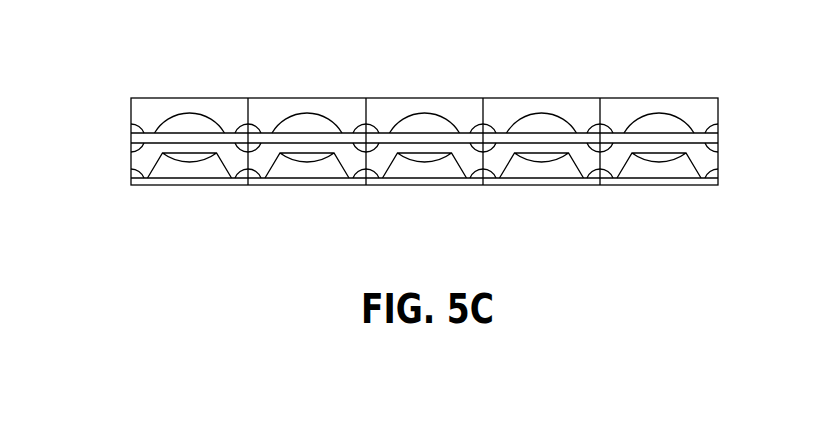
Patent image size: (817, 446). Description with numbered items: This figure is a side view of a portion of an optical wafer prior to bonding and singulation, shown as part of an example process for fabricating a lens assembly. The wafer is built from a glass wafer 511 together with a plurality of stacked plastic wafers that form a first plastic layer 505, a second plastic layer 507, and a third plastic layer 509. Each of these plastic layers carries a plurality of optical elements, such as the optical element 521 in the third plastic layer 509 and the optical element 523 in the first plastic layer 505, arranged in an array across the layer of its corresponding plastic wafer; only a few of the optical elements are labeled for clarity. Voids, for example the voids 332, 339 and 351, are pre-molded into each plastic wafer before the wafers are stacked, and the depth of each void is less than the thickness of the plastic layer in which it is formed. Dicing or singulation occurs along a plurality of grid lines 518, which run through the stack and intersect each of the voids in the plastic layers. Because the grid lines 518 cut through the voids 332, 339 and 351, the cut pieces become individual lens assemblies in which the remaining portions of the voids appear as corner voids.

The first plastic layer 505 is at (131, 163).
The second plastic layer 507 is at (131, 141).
The third plastic layer 509 is at (131, 106).
The glass wafer 511 is at (131, 186).
The void 332 is at (366, 131).
The optical element 521 is at (414, 114).
The grid lines 518 is at (483, 124).
The optical element 523 is at (698, 177).
The void 351 is at (365, 147).
The void 339 is at (361, 178).